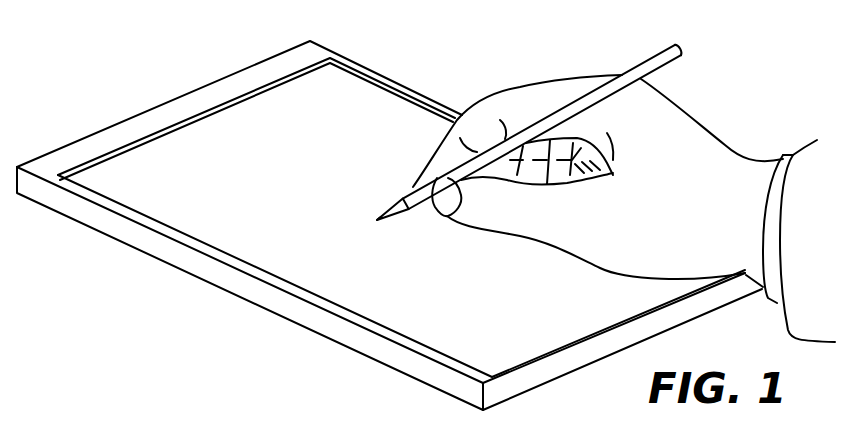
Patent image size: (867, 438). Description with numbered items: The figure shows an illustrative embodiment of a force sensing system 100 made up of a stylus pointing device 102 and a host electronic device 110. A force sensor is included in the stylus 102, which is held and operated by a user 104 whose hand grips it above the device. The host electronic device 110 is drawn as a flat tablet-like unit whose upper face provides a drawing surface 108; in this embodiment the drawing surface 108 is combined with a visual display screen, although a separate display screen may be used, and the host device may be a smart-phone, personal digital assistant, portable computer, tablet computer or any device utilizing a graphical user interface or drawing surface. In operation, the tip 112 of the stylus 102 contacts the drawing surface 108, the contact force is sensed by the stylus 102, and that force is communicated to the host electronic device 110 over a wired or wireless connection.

The force sensing system 100 is at (389, 209).
The stylus pointing device 102 is at (655, 61).
The user 104 is at (518, 90).
The drawing surface 108 is at (326, 109).
The host electronic device 110 is at (202, 90).
The tip 112 is at (356, 221).